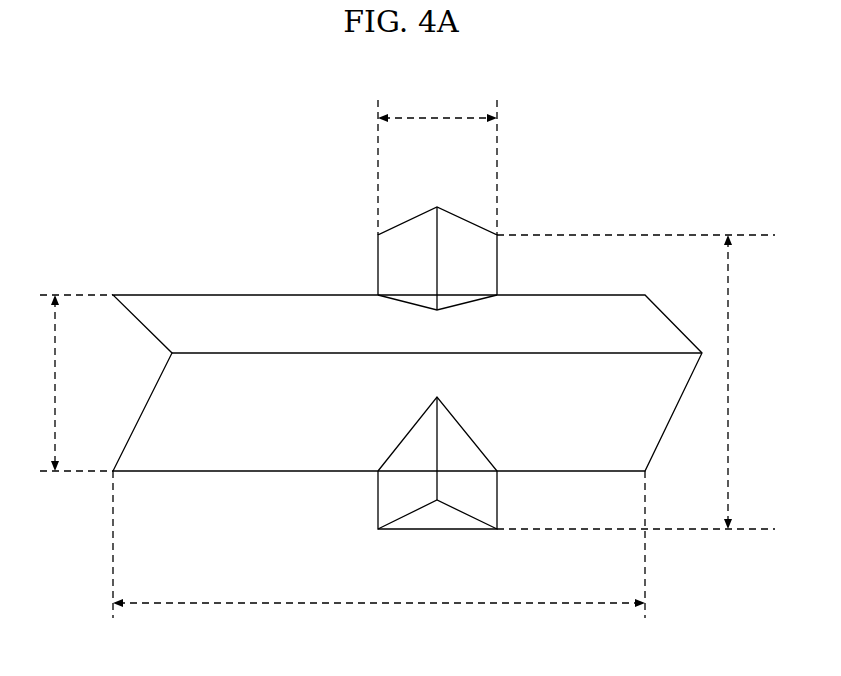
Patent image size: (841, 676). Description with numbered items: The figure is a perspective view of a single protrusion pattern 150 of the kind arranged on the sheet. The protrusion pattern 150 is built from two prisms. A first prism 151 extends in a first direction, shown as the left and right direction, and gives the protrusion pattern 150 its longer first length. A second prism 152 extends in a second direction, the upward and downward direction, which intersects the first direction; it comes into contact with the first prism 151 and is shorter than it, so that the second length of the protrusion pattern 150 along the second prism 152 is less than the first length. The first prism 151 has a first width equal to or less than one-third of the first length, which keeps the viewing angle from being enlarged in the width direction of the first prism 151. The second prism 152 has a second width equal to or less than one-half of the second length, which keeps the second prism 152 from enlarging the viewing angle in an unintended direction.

The protrusion pattern 150 is at (130, 159).
The first prism 151 is at (258, 294).
The second prism 152 is at (470, 222).